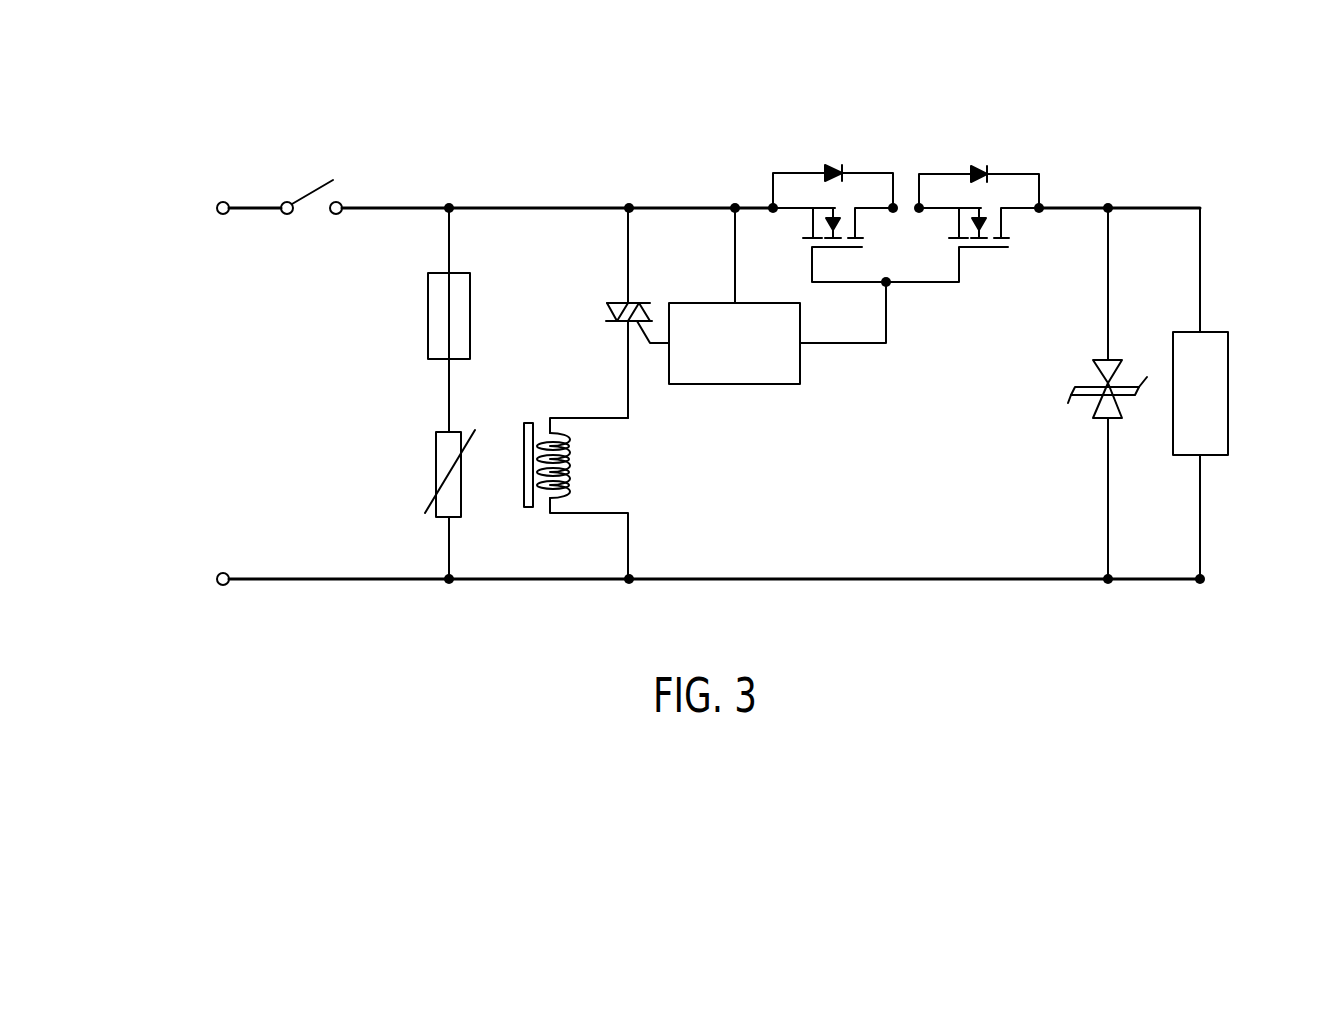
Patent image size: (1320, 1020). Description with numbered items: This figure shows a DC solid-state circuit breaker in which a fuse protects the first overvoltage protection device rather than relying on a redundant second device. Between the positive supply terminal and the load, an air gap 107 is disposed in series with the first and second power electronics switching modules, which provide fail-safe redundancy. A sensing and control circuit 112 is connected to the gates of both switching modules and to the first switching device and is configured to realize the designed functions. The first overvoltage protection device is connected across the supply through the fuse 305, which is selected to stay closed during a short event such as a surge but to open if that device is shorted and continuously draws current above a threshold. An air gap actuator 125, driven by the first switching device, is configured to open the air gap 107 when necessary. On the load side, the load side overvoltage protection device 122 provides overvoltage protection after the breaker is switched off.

The air gap 107 is at (308, 212).
The fuse F1 305 is at (427, 312).
The air gap actuator 125 is at (590, 413).
The sensing and control circuit 112 is at (732, 384).
The load side overvoltage protection device D1 122 is at (1100, 372).